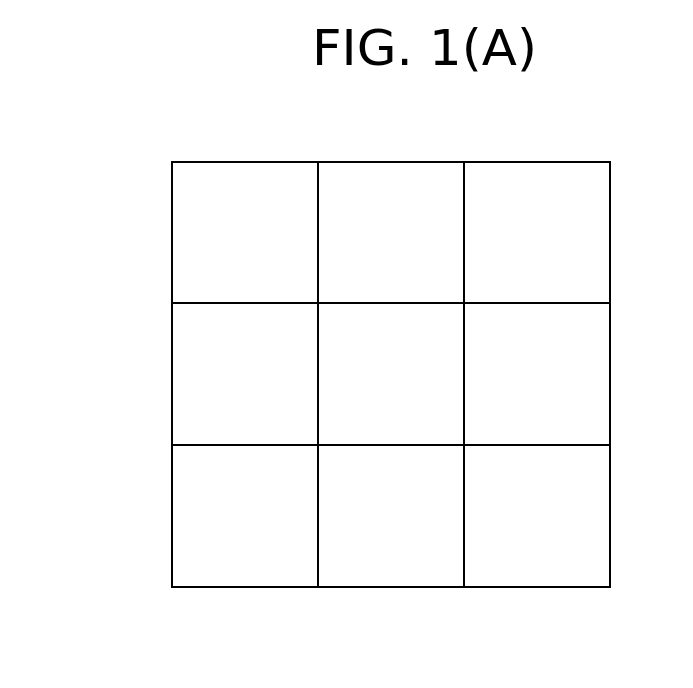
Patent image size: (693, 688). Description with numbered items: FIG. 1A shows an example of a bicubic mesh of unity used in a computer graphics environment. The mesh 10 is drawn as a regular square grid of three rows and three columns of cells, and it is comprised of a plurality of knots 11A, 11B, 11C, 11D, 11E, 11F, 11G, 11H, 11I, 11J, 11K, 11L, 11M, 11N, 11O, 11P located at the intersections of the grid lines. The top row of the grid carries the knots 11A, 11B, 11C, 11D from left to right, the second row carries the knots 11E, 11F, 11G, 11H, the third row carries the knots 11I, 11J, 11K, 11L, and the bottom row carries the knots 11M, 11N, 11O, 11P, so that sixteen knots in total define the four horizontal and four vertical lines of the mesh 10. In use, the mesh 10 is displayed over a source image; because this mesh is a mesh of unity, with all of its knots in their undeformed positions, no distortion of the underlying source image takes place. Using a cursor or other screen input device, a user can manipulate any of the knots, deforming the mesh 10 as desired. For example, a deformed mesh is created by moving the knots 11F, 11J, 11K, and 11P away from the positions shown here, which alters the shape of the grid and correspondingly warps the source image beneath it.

The mesh 10 is at (172, 206).
The knot 11A is at (172, 162).
The knot 11B is at (318, 162).
The knot 11C is at (464, 162).
The knot 11D is at (610, 162).
The knot 11E is at (172, 303).
The knot 11F is at (318, 303).
The knot 11G is at (464, 303).
The knot 11H is at (610, 303).
The knot 11I is at (172, 445).
The knot 11J is at (318, 445).
The knot 11K is at (464, 445).
The knot 11L is at (610, 445).
The knot 11M is at (172, 587).
The knot 11N is at (318, 587).
The knot 11O is at (464, 587).
The knot 11P is at (610, 587).